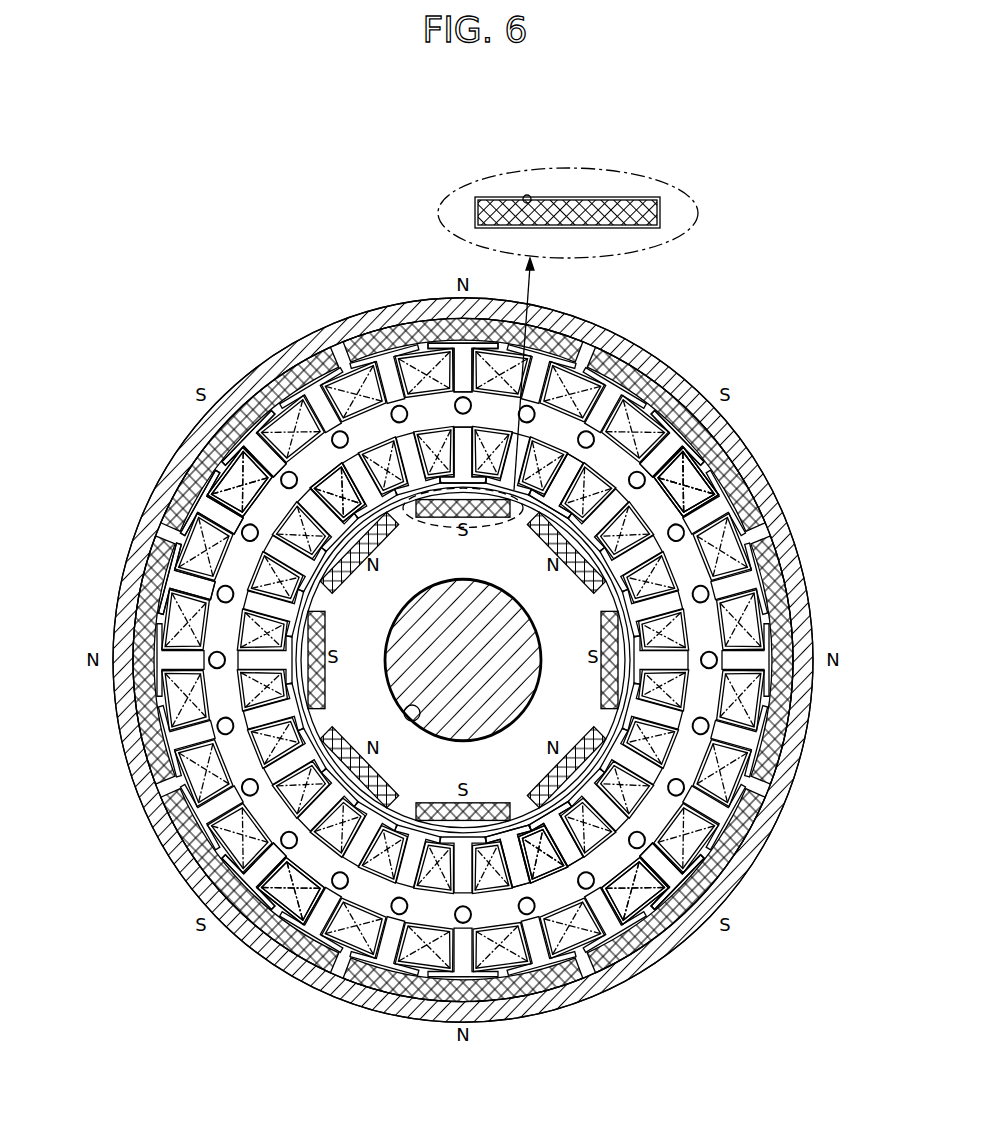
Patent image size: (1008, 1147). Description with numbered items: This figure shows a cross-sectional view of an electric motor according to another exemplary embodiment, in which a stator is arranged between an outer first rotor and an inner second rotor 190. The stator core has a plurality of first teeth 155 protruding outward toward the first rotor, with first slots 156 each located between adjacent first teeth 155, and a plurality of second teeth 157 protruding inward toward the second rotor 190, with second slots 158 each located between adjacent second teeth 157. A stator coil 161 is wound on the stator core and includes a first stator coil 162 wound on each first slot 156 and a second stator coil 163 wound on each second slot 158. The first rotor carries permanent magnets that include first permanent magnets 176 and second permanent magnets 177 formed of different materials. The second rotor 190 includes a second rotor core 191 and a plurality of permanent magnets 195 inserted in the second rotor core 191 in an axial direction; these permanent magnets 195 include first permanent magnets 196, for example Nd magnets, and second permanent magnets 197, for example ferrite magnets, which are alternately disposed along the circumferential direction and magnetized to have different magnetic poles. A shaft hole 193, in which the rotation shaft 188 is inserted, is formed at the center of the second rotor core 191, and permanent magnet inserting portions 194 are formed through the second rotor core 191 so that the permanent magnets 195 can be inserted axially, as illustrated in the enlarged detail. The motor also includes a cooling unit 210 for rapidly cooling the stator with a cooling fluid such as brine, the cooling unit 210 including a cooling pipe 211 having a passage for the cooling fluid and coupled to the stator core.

The first teeth 155 is at (665, 868).
The first slots 156 is at (553, 870).
The second teeth 157 is at (515, 853).
The second slots 158 is at (532, 872).
The stator coil 161 is at (463, 612).
The first stator coil 162 is at (272, 357).
The second stator coil 163 is at (330, 478).
The first permanent magnets 176 is at (393, 327).
The second permanent magnets 177 is at (630, 378).
The rotation shaft 188 is at (455, 702).
The second rotor 190 is at (842, 335).
The second rotor core 191 is at (605, 435).
The shaft hole 193 is at (412, 722).
The permanent magnet inserting portions 194 is at (527, 196).
The permanent magnets 195 is at (794, 392).
The first permanent magnet 196 is at (668, 453).
The second permanent magnet 197 is at (597, 210).
The cooling unit 210 is at (149, 547).
The cooling pipe 211 is at (245, 525).